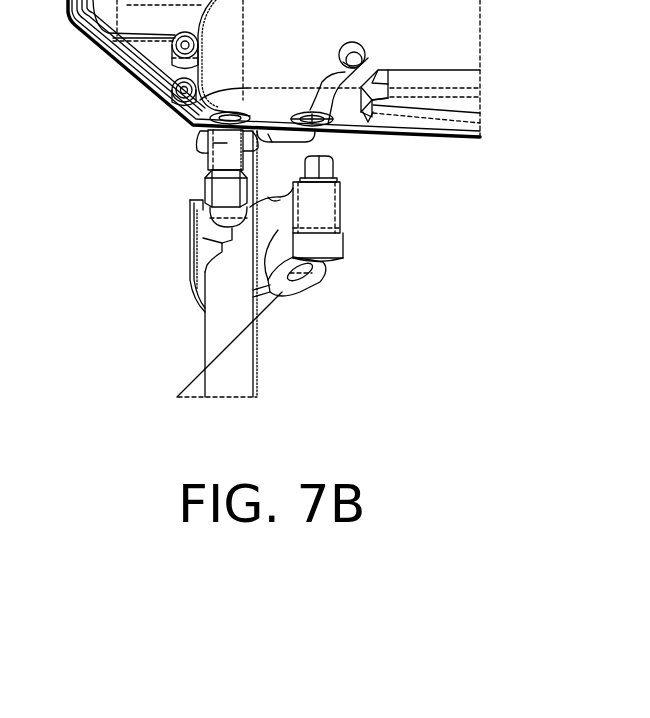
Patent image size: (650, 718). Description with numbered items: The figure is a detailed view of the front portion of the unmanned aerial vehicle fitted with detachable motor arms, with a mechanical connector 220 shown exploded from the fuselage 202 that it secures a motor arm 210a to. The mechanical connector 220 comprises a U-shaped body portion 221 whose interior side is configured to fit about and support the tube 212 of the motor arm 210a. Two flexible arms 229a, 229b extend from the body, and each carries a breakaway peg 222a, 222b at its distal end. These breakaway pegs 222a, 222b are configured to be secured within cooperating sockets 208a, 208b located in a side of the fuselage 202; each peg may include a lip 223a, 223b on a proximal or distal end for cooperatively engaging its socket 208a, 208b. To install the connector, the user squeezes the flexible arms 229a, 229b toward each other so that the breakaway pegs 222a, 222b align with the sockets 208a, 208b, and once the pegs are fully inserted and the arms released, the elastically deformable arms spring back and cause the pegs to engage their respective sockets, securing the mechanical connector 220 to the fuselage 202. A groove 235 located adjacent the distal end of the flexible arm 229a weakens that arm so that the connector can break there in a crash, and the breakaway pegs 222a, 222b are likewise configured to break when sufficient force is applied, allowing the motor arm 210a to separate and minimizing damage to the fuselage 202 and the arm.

The fuselage 202 is at (447, 127).
The socket 208a is at (263, 89).
The socket 208b is at (368, 58).
The motor arm 210a is at (208, 143).
The tube 212 is at (220, 373).
The mechanical connector 220 is at (317, 250).
The U-shaped body portion 221 is at (283, 297).
The breakaway peg 222a is at (197, 142).
The breakaway peg 222b is at (327, 153).
The lip 223a is at (203, 180).
The lip 223b is at (342, 177).
The flexible arm 229a is at (207, 223).
The flexible arm 229b is at (330, 213).
The groove 235 is at (188, 223).